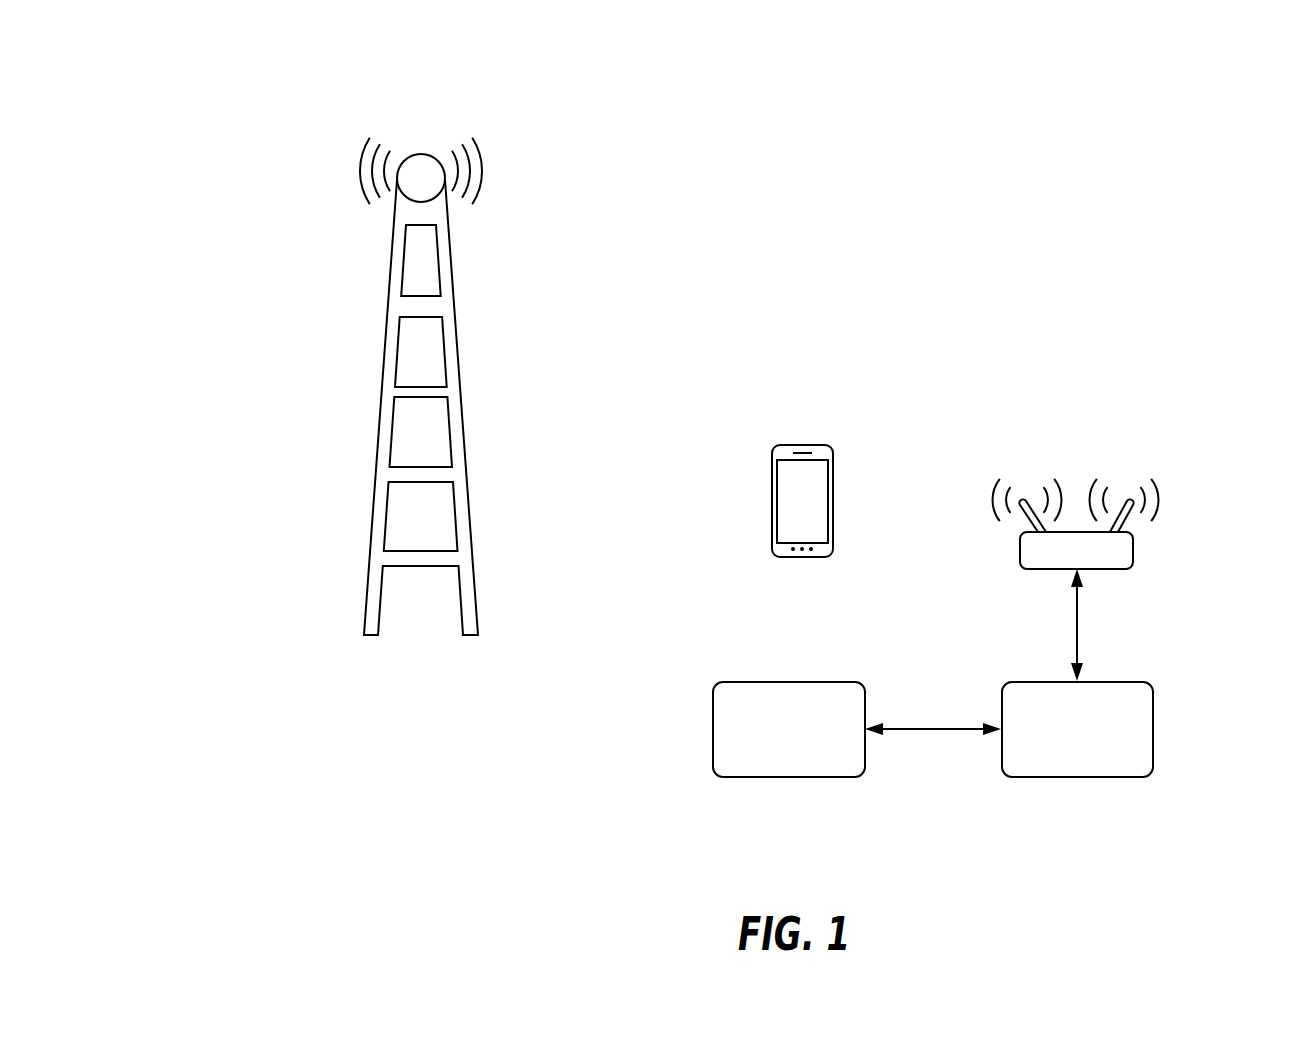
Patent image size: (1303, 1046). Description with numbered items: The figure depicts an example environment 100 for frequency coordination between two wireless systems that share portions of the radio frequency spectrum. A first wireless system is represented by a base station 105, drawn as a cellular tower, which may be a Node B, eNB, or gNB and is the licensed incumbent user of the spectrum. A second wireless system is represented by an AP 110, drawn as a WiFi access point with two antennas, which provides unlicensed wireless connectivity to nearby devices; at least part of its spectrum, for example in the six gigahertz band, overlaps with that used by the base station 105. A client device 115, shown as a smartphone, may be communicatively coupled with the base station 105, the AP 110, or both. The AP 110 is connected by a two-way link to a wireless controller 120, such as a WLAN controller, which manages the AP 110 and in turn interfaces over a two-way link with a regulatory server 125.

The environment 100 is at (210, 92).
The base station 105 is at (452, 268).
The AP 110 is at (1133, 560).
The client device 115 is at (833, 480).
The wireless controller 120 is at (1153, 720).
The regulatory server 125 is at (818, 682).